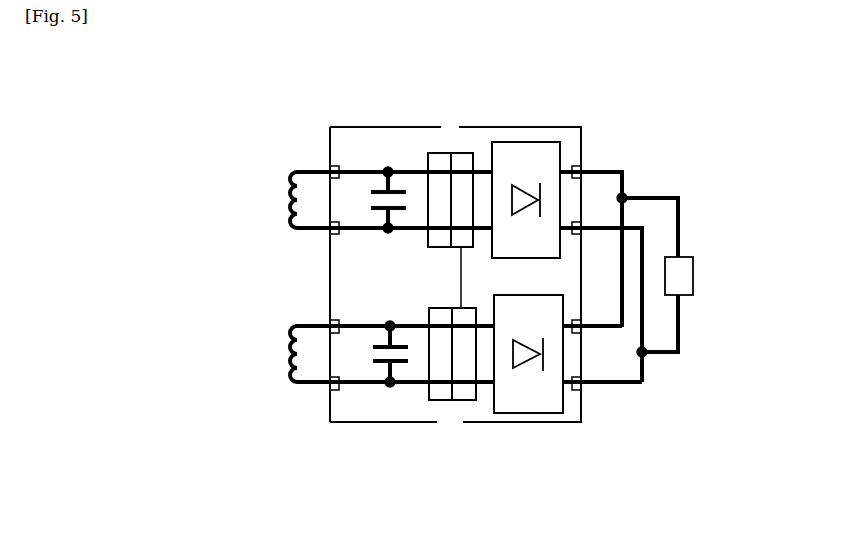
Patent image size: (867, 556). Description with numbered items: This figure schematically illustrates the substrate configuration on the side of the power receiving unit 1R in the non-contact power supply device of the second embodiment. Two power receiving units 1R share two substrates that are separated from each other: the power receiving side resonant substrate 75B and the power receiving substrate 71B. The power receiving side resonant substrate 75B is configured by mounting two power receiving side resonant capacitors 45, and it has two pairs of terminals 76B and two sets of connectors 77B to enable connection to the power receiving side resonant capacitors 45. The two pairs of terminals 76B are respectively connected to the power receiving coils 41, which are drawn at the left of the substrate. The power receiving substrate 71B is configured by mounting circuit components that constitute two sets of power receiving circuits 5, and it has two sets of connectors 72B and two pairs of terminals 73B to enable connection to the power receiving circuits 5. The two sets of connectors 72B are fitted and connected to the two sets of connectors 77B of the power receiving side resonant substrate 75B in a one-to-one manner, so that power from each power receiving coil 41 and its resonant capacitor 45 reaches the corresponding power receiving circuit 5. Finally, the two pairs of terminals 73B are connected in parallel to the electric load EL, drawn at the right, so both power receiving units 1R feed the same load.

The power receiving unit 1R is at (736, 201).
The power receiving circuit 5 is at (527, 153).
The power receiving coil 41 is at (283, 202).
The power receiving side resonant capacitor 45 is at (370, 198).
The power receiving substrate 71B is at (522, 422).
The connector 72B is at (458, 153).
The terminal 73B is at (583, 162).
The power receiving side resonant substrate 75B is at (378, 413).
The terminal 76B is at (328, 162).
The connector 77B is at (442, 153).
The electric load EL is at (693, 277).